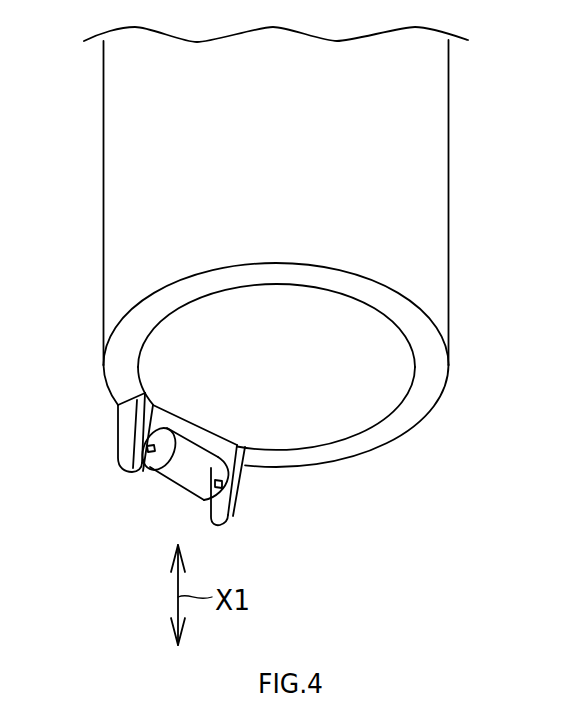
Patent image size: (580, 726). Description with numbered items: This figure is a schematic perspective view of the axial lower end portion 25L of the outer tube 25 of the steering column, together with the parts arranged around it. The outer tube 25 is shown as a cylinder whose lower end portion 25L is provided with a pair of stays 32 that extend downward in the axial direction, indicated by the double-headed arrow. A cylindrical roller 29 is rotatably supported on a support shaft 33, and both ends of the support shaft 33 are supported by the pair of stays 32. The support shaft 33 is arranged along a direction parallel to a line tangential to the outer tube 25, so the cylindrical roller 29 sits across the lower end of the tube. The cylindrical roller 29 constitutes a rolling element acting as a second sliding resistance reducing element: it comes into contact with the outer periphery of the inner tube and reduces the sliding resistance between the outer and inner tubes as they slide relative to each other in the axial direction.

The outer tube 25 is at (412, 108).
The axial lower end portion of the outer tube 25L is at (403, 288).
The stays 32 is at (124, 430).
The cylindrical roller 29 is at (176, 472).
The support shaft 33 is at (168, 424).